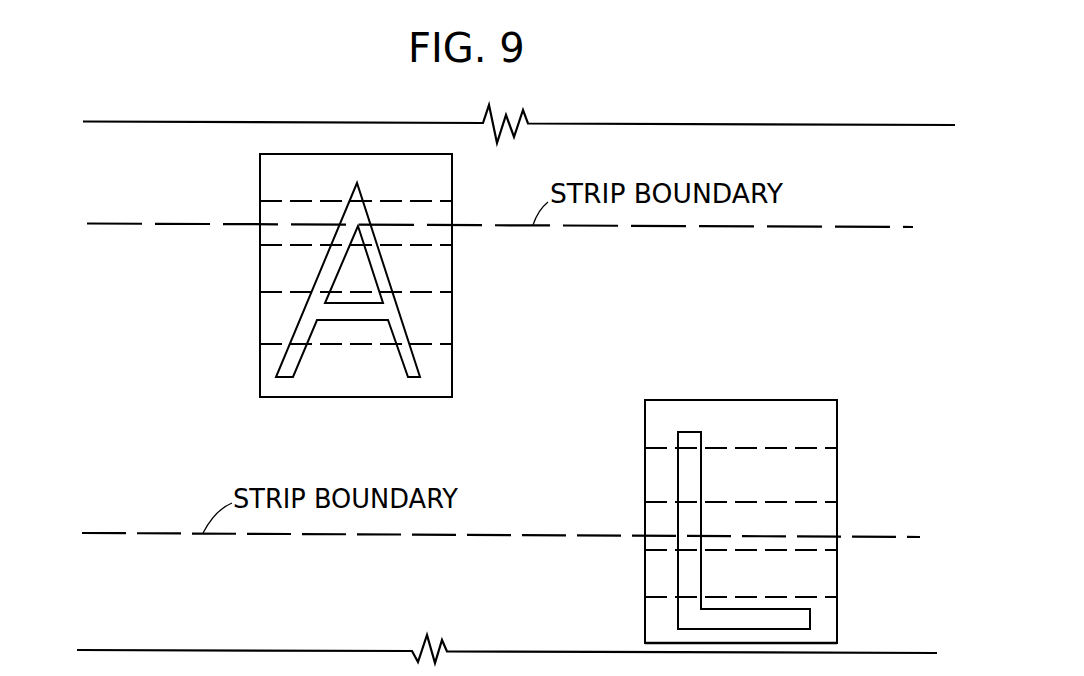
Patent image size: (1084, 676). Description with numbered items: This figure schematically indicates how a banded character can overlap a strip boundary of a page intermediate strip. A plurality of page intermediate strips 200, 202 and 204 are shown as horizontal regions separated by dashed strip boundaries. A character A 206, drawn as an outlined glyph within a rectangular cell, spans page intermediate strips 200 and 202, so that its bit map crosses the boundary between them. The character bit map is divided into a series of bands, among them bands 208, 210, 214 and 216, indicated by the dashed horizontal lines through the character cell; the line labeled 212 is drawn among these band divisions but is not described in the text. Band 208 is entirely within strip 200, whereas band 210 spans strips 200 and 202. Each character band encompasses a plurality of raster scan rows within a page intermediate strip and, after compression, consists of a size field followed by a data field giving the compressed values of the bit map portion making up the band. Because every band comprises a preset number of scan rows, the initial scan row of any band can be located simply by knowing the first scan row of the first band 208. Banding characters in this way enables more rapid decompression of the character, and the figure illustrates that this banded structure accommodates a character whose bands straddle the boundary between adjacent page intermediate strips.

The page intermediate strip 200 is at (158, 178).
The page intermediate strip 202 is at (153, 345).
The page intermediate strip 204 is at (175, 588).
The character A 206 is at (410, 372).
The band 208 is at (270, 173).
The band 210 is at (270, 208).
The second scan line 212 is at (267, 262).
The band 214 is at (268, 318).
The band 216 is at (267, 368).